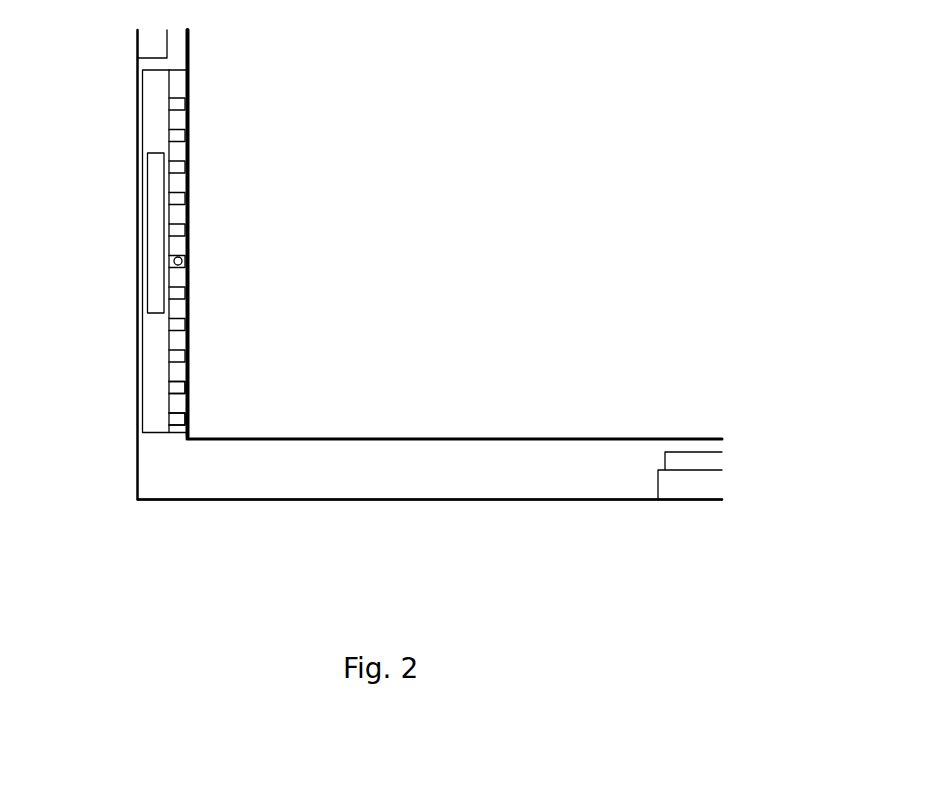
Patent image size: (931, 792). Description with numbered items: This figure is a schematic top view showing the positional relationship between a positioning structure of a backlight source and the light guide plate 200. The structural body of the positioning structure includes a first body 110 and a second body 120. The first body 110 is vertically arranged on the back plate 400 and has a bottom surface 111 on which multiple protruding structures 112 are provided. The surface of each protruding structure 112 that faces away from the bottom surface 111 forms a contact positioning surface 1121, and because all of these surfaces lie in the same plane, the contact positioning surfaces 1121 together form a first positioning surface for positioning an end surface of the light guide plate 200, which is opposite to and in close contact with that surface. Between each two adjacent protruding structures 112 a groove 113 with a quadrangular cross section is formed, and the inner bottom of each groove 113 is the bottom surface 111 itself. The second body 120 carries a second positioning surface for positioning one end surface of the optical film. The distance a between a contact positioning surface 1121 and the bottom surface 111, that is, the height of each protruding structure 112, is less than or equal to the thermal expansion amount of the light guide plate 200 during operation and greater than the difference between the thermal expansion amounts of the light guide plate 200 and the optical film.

The first body 110 is at (156, 128).
The second body 120 is at (156, 211).
The protruding structure 112 is at (176, 336).
The contact positioning surface 1121 is at (187, 180).
The distance a is at (185, 260).
The groove 113 is at (185, 383).
The bottom surface 111 is at (170, 424).
The light guide plate 200 is at (472, 422).
The back plate 400 is at (233, 460).